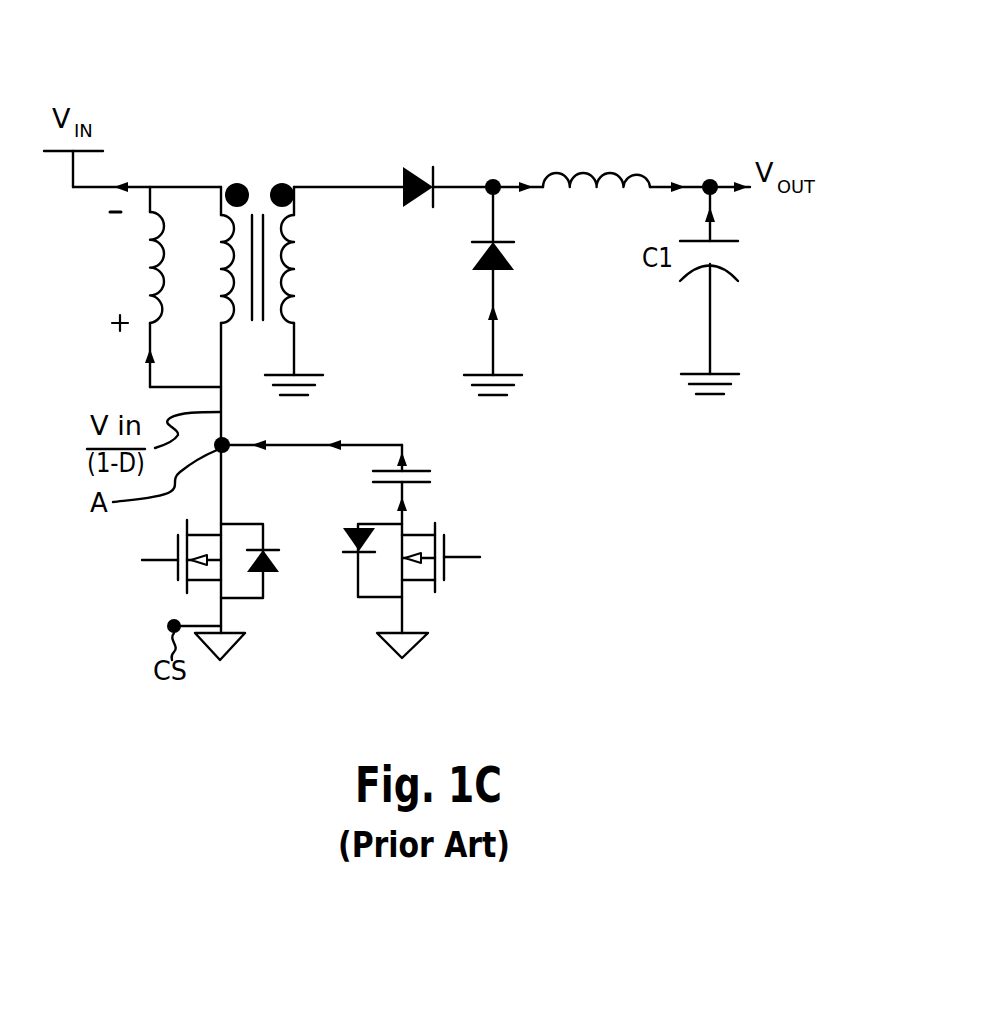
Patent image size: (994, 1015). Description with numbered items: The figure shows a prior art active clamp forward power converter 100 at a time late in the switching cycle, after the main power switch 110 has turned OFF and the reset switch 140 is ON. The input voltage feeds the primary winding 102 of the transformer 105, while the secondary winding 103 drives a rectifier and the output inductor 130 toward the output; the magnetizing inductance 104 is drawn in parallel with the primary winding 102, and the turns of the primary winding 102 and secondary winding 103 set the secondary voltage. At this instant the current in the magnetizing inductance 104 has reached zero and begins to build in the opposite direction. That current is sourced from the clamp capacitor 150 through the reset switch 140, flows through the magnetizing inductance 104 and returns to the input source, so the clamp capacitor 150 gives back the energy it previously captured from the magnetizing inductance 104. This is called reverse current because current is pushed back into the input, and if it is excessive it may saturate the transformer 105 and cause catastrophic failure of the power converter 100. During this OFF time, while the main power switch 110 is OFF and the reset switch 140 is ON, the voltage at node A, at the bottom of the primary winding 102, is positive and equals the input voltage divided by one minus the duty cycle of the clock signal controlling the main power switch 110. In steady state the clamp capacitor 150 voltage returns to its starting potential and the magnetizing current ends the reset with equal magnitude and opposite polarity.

The active clamp forward power converter 100 is at (742, 81).
The primary winding 102 is at (205, 257).
The secondary winding 103 is at (325, 262).
The magnetizing inductance 104 is at (150, 285).
The transformer 105 is at (291, 158).
The main power switch 110 is at (155, 586).
The output inductor 130 is at (599, 160).
The reset switch 140 is at (479, 572).
The clamp capacitor 150 is at (478, 454).